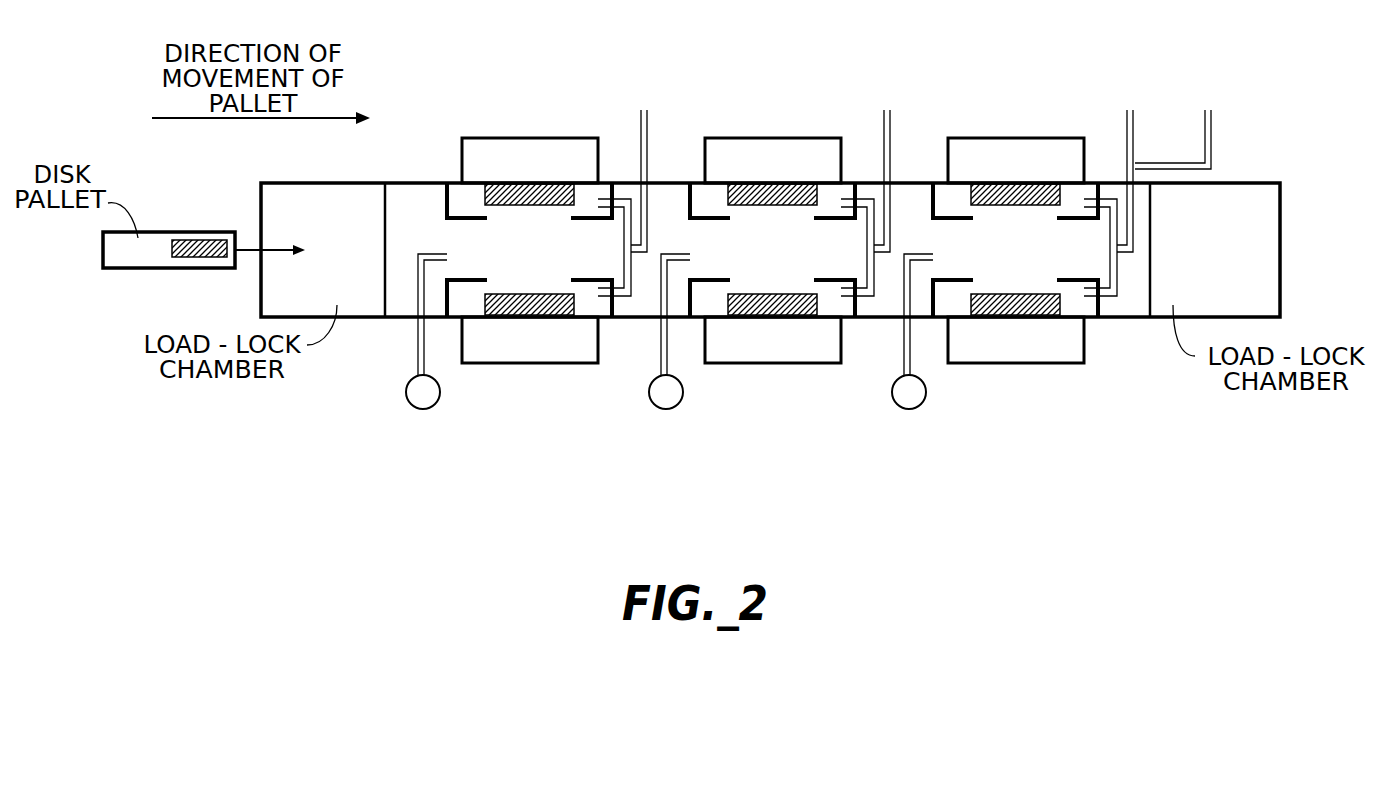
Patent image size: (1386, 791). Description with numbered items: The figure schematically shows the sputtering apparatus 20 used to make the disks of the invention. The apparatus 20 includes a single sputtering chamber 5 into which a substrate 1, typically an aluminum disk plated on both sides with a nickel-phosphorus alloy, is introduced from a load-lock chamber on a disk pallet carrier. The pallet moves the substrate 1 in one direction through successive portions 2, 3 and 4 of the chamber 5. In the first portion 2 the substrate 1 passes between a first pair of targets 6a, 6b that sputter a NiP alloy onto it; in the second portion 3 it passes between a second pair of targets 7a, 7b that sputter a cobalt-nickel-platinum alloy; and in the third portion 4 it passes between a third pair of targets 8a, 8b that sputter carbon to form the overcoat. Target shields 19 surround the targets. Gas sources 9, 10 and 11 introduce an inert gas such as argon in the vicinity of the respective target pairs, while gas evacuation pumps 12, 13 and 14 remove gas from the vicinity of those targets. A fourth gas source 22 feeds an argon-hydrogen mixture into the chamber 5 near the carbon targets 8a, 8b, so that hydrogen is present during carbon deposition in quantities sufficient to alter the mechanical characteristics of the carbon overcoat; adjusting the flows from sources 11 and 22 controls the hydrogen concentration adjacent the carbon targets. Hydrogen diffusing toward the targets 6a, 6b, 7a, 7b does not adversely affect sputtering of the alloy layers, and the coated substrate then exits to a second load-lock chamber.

The substrate 1 is at (192, 260).
The portion of sputtering chamber 2 is at (520, 261).
The portion of sputtering chamber 3 is at (772, 250).
The portion of sputtering chamber 4 is at (1015, 250).
The sputtering chamber 5 is at (415, 197).
The nickel-phosphorus alloy sputtering target 6a is at (533, 184).
The nickel-phosphorus alloy sputtering target 6b is at (503, 320).
The magnetic alloy sputtering target 7a is at (773, 155).
The magnetic alloy sputtering target 7b is at (773, 354).
The carbon sputtering target 8a is at (1016, 155).
The carbon sputtering target 8b is at (1016, 354).
The gas source 9 is at (648, 140).
The gas source 10 is at (910, 179).
The gas source 11 is at (1153, 179).
The gas evacuation pump 12 is at (422, 408).
The gas evacuation pump 13 is at (686, 351).
The gas evacuation pump 14 is at (929, 351).
The target shield 19 is at (612, 190).
The sputtering apparatus 20 is at (1115, 47).
The fourth gas source 22 is at (1212, 135).